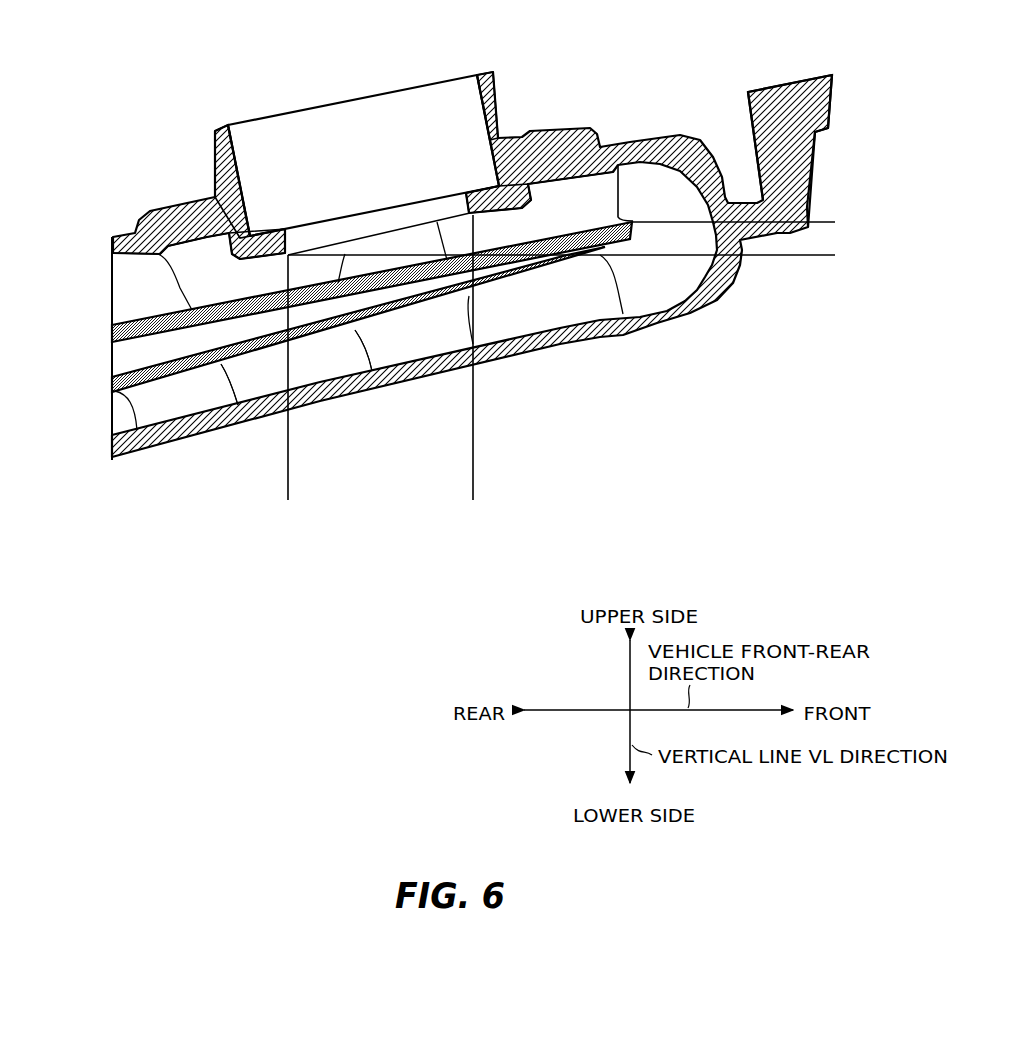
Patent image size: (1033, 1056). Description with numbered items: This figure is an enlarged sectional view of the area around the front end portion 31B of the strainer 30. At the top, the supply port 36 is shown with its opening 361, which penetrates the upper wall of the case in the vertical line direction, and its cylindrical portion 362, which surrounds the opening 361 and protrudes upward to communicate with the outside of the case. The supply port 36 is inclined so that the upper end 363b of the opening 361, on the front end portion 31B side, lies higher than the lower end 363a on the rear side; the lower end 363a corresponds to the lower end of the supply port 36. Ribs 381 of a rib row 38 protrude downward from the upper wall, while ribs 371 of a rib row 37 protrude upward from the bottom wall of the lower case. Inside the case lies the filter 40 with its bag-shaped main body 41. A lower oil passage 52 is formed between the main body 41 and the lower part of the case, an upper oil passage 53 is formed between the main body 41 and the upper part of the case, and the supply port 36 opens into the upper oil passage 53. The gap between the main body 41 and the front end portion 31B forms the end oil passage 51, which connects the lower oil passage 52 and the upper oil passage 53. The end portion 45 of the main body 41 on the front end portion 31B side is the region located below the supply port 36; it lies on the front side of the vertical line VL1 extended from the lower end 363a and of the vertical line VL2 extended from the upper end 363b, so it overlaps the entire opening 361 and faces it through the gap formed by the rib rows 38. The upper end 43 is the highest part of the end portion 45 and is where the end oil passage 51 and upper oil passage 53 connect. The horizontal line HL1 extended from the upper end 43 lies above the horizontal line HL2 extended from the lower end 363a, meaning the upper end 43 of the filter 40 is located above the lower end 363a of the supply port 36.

The strainer 30 is at (709, 415).
The front end portion 31B is at (728, 201).
The supply port 36 is at (152, 71).
The opening 361 is at (301, 231).
The cylindrical portion 362 is at (215, 128).
The lower end 363a is at (288, 254).
The upper end 363b is at (470, 213).
The rib row 37 is at (628, 293).
The rib 371 is at (247, 392).
The rib row 38 is at (130, 242).
The rib 381 is at (190, 250).
The filter 40 is at (110, 333).
The main body 41 is at (112, 388).
The upper end 43 is at (633, 222).
The end portion 45 is at (457, 250).
The end oil passage 51 is at (659, 212).
The lower oil passage 52 is at (178, 418).
The upper oil passage 53 is at (166, 303).
The horizontal line HL1 is at (760, 220).
The horizontal line HL2 is at (587, 253).
The vertical line VL1 is at (291, 395).
The vertical line VL2 is at (475, 373).